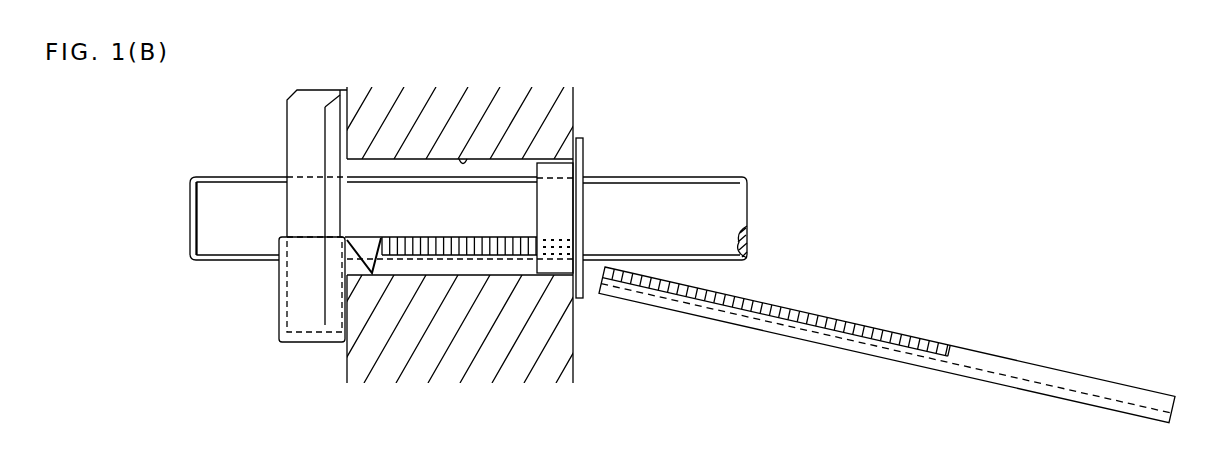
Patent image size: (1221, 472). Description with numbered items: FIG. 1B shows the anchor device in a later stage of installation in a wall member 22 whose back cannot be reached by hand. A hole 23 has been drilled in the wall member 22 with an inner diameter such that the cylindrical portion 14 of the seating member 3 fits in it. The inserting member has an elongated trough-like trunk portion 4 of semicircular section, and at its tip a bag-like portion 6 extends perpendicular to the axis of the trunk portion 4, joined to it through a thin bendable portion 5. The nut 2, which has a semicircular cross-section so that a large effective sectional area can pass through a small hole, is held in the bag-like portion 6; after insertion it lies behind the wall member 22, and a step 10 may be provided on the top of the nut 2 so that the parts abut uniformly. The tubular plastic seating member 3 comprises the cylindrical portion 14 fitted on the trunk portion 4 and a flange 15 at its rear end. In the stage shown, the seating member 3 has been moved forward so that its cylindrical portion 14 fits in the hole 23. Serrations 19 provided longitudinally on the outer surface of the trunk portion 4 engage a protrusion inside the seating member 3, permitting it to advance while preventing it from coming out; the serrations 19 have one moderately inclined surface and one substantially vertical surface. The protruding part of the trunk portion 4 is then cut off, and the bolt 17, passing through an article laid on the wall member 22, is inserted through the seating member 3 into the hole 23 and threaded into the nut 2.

The nut 2 is at (290, 110).
The seating member 3 is at (603, 165).
The trough-like trunk portion 4 is at (493, 233).
The bendable portion 5 is at (372, 272).
The bag-like portion 6 is at (279, 328).
The step 10 is at (325, 107).
The cylindrical portion 14 is at (542, 163).
The flange 15 is at (583, 140).
The bolt 17 is at (723, 177).
The serrations 19 is at (453, 256).
The wall member 22 is at (573, 350).
The hole 23 is at (463, 158).